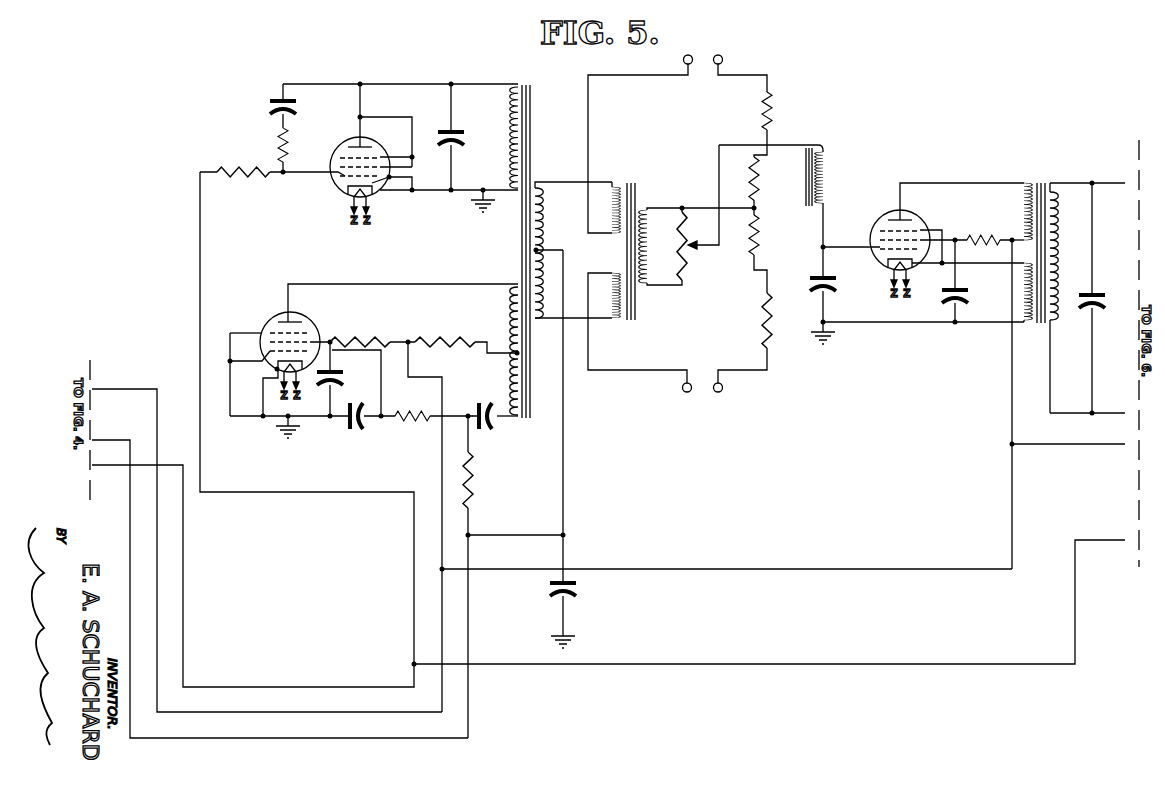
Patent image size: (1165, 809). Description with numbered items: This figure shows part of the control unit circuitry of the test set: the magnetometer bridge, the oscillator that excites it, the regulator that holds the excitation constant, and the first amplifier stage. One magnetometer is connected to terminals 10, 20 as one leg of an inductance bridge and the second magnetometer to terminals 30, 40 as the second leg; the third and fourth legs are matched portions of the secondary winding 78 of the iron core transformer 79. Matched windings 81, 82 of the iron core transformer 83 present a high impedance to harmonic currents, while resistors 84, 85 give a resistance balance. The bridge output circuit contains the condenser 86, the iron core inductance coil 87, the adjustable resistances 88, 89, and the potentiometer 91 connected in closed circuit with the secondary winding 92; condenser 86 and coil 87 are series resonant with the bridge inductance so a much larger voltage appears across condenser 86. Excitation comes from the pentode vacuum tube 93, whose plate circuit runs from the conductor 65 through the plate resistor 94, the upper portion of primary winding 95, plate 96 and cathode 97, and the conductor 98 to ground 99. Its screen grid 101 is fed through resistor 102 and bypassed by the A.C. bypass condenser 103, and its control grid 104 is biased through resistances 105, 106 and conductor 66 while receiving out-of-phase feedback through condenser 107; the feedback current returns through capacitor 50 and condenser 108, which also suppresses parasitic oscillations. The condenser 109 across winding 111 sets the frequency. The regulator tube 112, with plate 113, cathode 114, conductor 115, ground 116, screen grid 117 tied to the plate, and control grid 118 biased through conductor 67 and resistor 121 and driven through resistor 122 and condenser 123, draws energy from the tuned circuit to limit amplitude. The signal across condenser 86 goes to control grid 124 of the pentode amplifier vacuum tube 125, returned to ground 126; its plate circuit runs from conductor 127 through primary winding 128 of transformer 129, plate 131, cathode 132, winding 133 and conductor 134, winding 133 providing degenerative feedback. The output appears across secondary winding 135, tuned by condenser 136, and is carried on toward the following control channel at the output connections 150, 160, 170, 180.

The terminal 10 is at (721, 57).
The terminal 20 is at (688, 55).
The terminal 30 is at (722, 391).
The terminal 40 is at (683, 391).
The capacitor 50 is at (578, 585).
The positive source of power 65 is at (108, 389).
The negative source of power 66 is at (94, 440).
The negative source of power 67 is at (94, 465).
The secondary winding 78 is at (545, 207).
The iron core transformer 79 is at (530, 87).
The winding 81 is at (614, 297).
The winding 82 is at (613, 208).
The iron core transformer 83 is at (634, 186).
The resistor 84 is at (770, 112).
The resistor 85 is at (770, 322).
The condenser 86 is at (818, 279).
The iron core inductance coil 87 is at (828, 176).
The resistance 88 is at (757, 180).
The resistance 89 is at (757, 234).
The potentiometer 91 is at (690, 265).
The secondary winding 92 is at (696, 246).
The pentode vacuum tube 93 is at (304, 320).
The plate resistor 94 is at (462, 326).
The primary winding 95 is at (510, 344).
The plate 96 is at (288, 305).
The cathode 97 is at (276, 368).
The conductor 98 is at (230, 400).
The ground 99 is at (292, 427).
The screen grid 101 is at (268, 331).
The resistor 102 is at (352, 342).
The A.C. bypass condenser 103 is at (337, 372).
The control grid 104 is at (268, 349).
The resistance 105 is at (420, 410).
The resistance 106 is at (470, 484).
The condenser 107 is at (491, 428).
The condenser 108 is at (357, 428).
The condenser 109 is at (451, 132).
The winding 111 is at (510, 120).
The regulator tube 112 is at (366, 145).
The plate 113 is at (349, 146).
The cathode 114 is at (348, 185).
The conductor 115 is at (444, 186).
The ground 116 is at (475, 204).
The screen grid 117 is at (345, 158).
The control grid 118 is at (340, 172).
The resistor 121 is at (233, 168).
The resistor 122 is at (283, 139).
The condenser 123 is at (279, 84).
The control grid 124 is at (875, 245).
The pentode amplifier vacuum tube 125 is at (915, 222).
The ground 126 is at (830, 346).
The conductor 127 is at (722, 569).
The primary winding 128 is at (1020, 209).
The transformer 129 is at (1042, 183).
The plate 131 is at (893, 219).
The cathode 132 is at (878, 258).
The winding 133 is at (1022, 285).
The conductor 134 is at (912, 323).
The secondary winding 135 is at (1054, 222).
The condenser 136 is at (1094, 295).
The output conductor to FIG. 6 150 is at (1096, 183).
The output conductor to FIG. 6 160 is at (1092, 413).
The output conductor to FIG. 6 170 is at (1108, 444).
The output conductor to FIG. 6 180 is at (1112, 540).